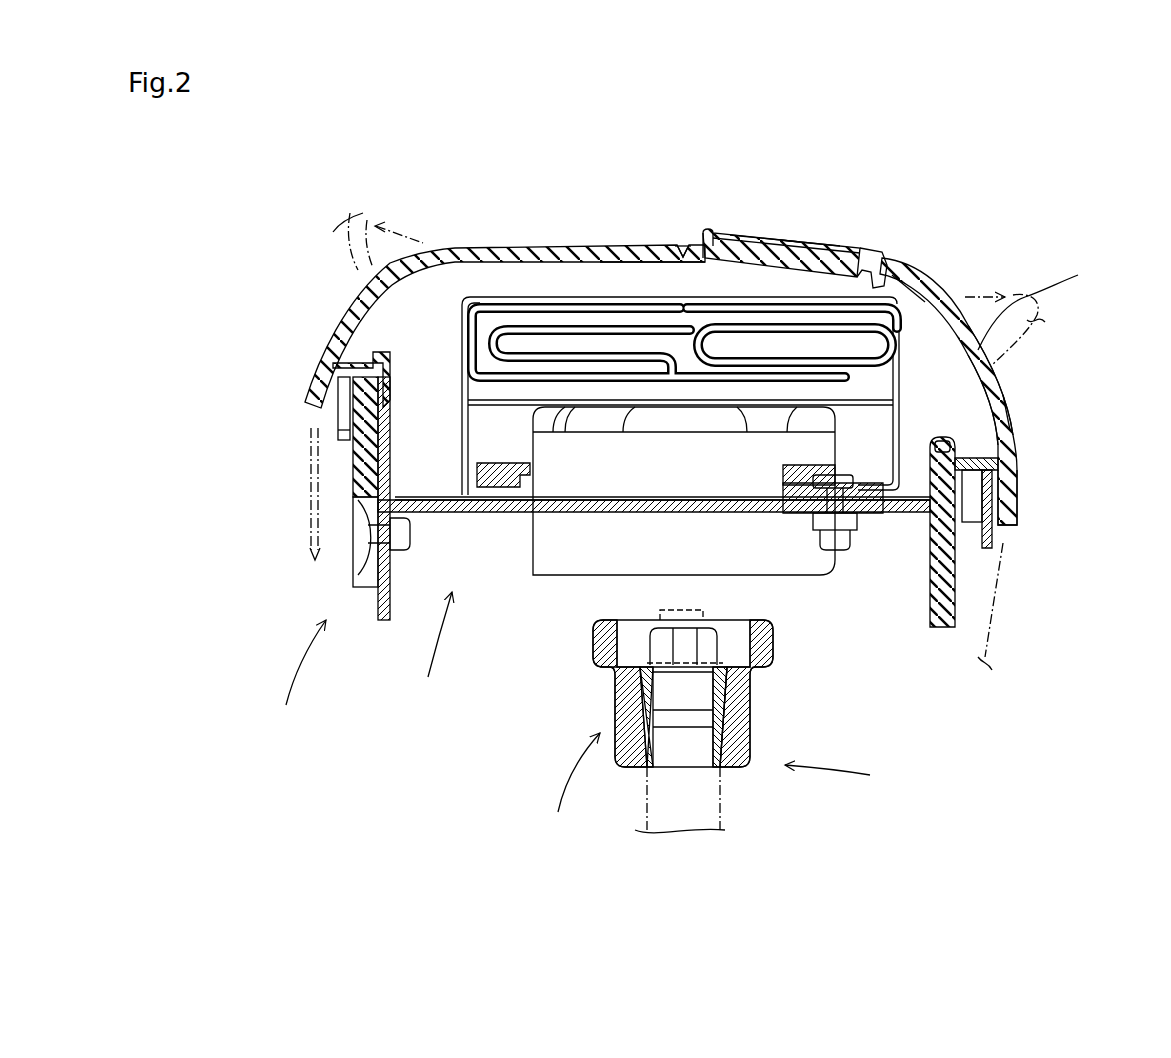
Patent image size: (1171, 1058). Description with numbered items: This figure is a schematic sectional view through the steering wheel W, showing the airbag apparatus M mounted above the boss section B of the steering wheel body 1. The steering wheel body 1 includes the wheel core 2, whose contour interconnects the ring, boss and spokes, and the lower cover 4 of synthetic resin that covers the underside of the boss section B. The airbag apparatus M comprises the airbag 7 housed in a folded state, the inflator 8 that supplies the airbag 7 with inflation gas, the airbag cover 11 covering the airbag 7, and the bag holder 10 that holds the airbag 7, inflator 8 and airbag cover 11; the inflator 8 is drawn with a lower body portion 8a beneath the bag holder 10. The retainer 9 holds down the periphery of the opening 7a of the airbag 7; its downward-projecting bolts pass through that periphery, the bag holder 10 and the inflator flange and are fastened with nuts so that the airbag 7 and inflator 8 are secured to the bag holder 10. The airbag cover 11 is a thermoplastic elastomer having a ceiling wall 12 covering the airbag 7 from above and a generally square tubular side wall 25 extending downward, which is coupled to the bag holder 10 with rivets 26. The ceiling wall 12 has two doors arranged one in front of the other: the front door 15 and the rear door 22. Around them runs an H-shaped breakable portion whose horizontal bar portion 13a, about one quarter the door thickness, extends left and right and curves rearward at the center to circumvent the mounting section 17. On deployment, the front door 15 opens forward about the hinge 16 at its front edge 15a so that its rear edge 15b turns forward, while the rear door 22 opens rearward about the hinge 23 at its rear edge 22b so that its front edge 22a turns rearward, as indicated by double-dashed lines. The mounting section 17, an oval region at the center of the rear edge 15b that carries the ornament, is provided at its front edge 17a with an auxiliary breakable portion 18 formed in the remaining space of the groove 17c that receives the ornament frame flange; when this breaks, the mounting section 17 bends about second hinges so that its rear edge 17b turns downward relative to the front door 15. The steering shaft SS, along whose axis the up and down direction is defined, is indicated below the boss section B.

The steering wheel body 1 is at (574, 789).
The wheel core 2 is at (748, 745).
The lower cover 4 is at (992, 652).
The airbag 7 is at (602, 298).
The opening of the airbag 7a is at (528, 487).
The inflator 8 is at (802, 592).
The base plate 8a is at (583, 514).
The retainer 9 is at (860, 447).
The bag holder 10 is at (378, 627).
The airbag cover 11 is at (1032, 397).
The ceiling wall 12 is at (1012, 395).
The horizontal bar portion 13a is at (684, 250).
The front door 15 is at (942, 262).
The front edge of the front door 15a is at (1045, 309).
The rear edge of the front door 15b is at (712, 258).
The hinge 16 is at (1008, 385).
The mounting section 17 is at (820, 252).
The front edge of the mounting section 17a is at (872, 270).
The rear edge of the mounting section 17b is at (757, 256).
The groove 17c is at (936, 262).
The auxiliary breakable portion 18 is at (800, 236).
The rear door 22 is at (437, 240).
The front edge of the rear door 22a is at (672, 262).
The rear edge of the rear door 22b is at (386, 293).
The hinge 23 is at (368, 290).
The side wall 25 is at (360, 455).
The rivets 26 is at (360, 538).
The steering wheel W is at (301, 679).
The airbag apparatus M is at (436, 652).
The boss section B is at (839, 781).
The stud shaft SS is at (712, 810).